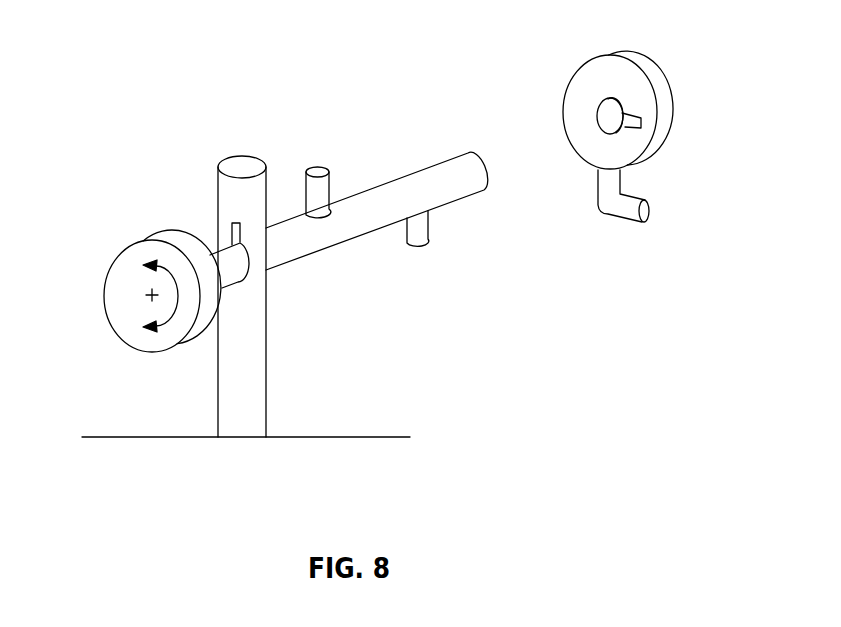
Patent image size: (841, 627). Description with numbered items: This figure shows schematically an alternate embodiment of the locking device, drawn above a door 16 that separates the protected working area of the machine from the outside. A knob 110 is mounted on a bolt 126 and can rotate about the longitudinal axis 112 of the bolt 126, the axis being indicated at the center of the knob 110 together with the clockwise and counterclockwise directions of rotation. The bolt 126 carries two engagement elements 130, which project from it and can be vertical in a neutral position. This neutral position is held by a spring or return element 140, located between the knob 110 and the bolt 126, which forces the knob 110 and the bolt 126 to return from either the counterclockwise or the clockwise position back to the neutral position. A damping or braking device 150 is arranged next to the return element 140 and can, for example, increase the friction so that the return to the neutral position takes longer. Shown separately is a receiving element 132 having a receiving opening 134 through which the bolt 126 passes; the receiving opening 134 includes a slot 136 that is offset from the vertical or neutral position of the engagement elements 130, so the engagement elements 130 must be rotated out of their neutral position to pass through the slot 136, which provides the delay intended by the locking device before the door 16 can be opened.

The door 16 is at (105, 437).
The knob 110 is at (118, 264).
The longitudinal axis 112 is at (151, 296).
The bolt 126 is at (372, 187).
The engagement elements 130 is at (317, 167).
The receiving element 132 is at (574, 64).
The receiving opening 134 is at (597, 113).
The slot 136 is at (642, 121).
The return element 140 is at (241, 281).
The damping or braking device 150 is at (218, 221).